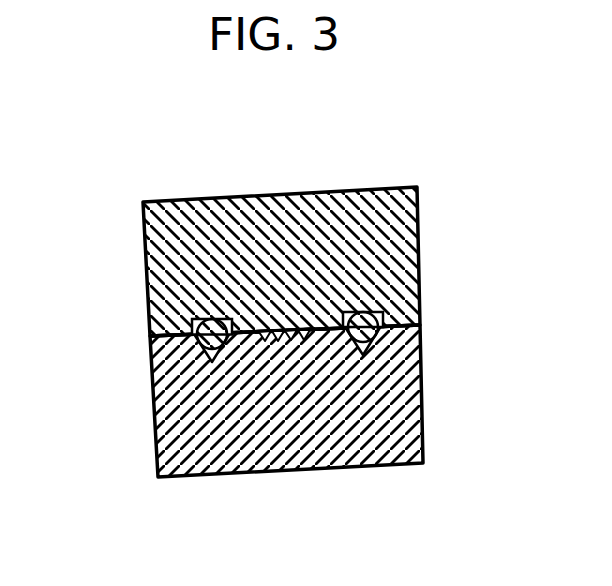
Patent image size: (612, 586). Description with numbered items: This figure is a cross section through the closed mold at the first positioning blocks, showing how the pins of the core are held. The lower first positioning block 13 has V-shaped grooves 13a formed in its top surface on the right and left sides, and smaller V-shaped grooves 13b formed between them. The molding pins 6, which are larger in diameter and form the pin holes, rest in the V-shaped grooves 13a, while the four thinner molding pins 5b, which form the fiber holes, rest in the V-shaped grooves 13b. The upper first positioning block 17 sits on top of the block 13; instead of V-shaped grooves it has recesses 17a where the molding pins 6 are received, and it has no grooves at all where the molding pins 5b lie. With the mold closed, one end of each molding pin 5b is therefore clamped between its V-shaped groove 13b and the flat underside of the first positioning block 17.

The first positioning block 17 is at (249, 195).
The recesses 17a is at (157, 323).
The first positioning block 13 is at (220, 482).
The V-shaped grooves 13a is at (362, 342).
The V-shaped grooves 13b is at (288, 340).
The molding pins 6 is at (218, 328).
The molding pins 5b is at (291, 330).